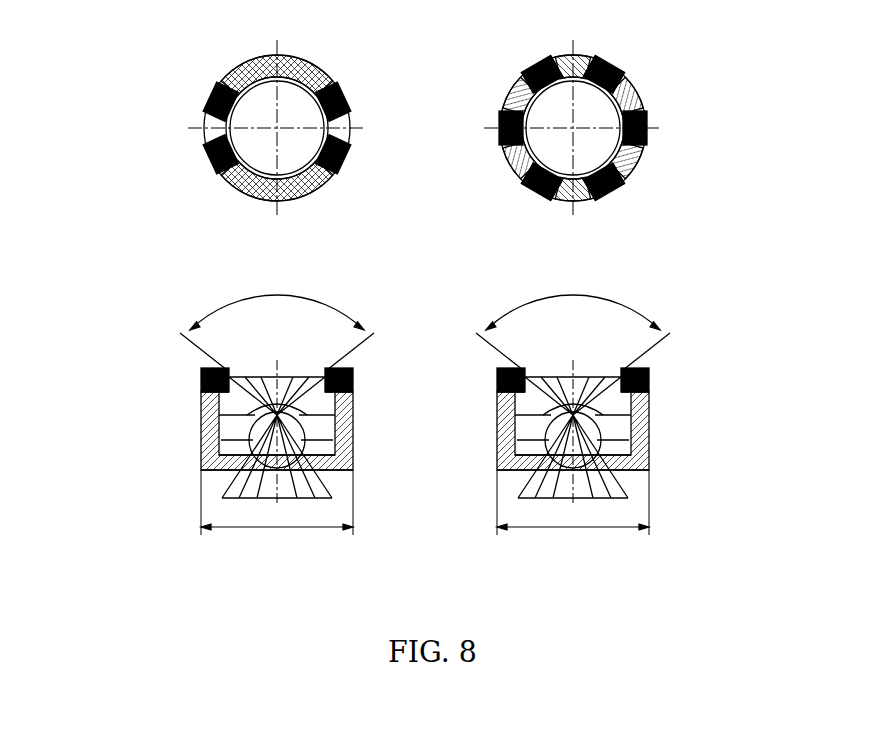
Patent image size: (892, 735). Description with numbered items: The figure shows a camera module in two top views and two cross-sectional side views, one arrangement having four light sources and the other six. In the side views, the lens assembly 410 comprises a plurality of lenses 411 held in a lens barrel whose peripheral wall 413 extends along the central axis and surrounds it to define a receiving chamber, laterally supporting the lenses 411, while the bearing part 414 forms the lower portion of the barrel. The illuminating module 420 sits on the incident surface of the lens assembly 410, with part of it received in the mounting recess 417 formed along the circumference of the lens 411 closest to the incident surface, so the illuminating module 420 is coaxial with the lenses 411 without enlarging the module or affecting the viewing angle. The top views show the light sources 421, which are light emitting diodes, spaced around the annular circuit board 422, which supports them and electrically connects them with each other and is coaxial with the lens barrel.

The lens assembly 410 is at (121, 402).
The lenses 411 is at (337, 410).
The peripheral wall 413 is at (205, 433).
The bearing part 414 is at (205, 467).
The mounting recess 417 is at (212, 403).
The illuminating module 420 is at (147, 148).
The light sources 421 is at (332, 90).
The annular circuit board 422 is at (285, 60).